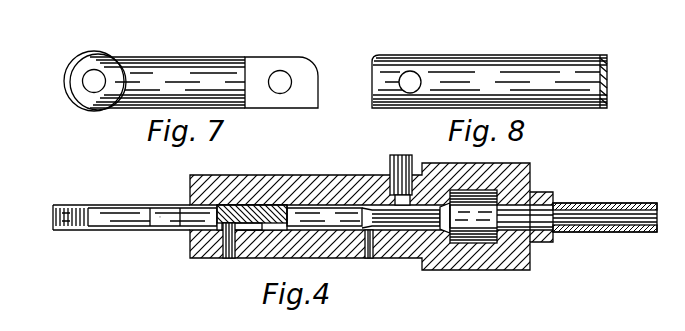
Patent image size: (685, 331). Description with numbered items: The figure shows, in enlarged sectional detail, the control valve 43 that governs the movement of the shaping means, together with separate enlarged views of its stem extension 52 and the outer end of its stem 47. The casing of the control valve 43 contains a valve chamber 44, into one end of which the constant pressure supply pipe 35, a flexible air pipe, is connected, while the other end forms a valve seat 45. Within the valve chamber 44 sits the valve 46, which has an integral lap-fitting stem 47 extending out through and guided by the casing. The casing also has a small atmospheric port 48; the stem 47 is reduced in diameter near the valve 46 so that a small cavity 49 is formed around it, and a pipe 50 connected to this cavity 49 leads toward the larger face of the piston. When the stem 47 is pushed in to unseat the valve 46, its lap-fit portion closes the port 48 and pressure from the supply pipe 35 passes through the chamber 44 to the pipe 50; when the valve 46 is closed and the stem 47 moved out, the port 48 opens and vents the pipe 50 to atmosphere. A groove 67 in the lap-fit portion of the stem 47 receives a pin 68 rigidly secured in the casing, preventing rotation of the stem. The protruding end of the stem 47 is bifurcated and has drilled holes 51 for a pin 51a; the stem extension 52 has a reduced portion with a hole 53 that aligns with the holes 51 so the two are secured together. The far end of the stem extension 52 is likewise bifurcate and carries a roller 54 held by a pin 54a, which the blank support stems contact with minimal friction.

In FIG. 4, the constant pressure supply pipe 35 is at (625, 207).
In FIG. 4, the control valve 43 is at (273, 181).
In FIG. 4, the valve chamber 44 is at (480, 232).
In FIG. 4, the valve seat 45 is at (447, 209).
In FIG. 4, the valve 46 is at (447, 234).
In FIG. 8, the stem 47 is at (511, 66).
In FIG. 4, the stem 47 is at (281, 206).
In FIG. 4, the atmospheric port 48 is at (374, 259).
In FIG. 4, the cavity 49 is at (377, 211).
In FIG. 4, the pipe 50 is at (391, 163).
In FIG. 8, the drilled holes 51 is at (411, 80).
In FIG. 4, the pin 51a is at (160, 230).
In FIG. 7, the stem extension 52 is at (184, 60).
In FIG. 4, the stem extension 52 is at (100, 213).
In FIG. 7, the hole 53 is at (282, 80).
In FIG. 7, the roller 54 is at (69, 58).
In FIG. 4, the roller 54 is at (56, 215).
In FIG. 7, the pin 54a is at (96, 79).
In FIG. 4, the pin 54a is at (67, 211).
In FIG. 4, the groove 67 is at (255, 246).
In FIG. 4, the pin 68 is at (218, 259).